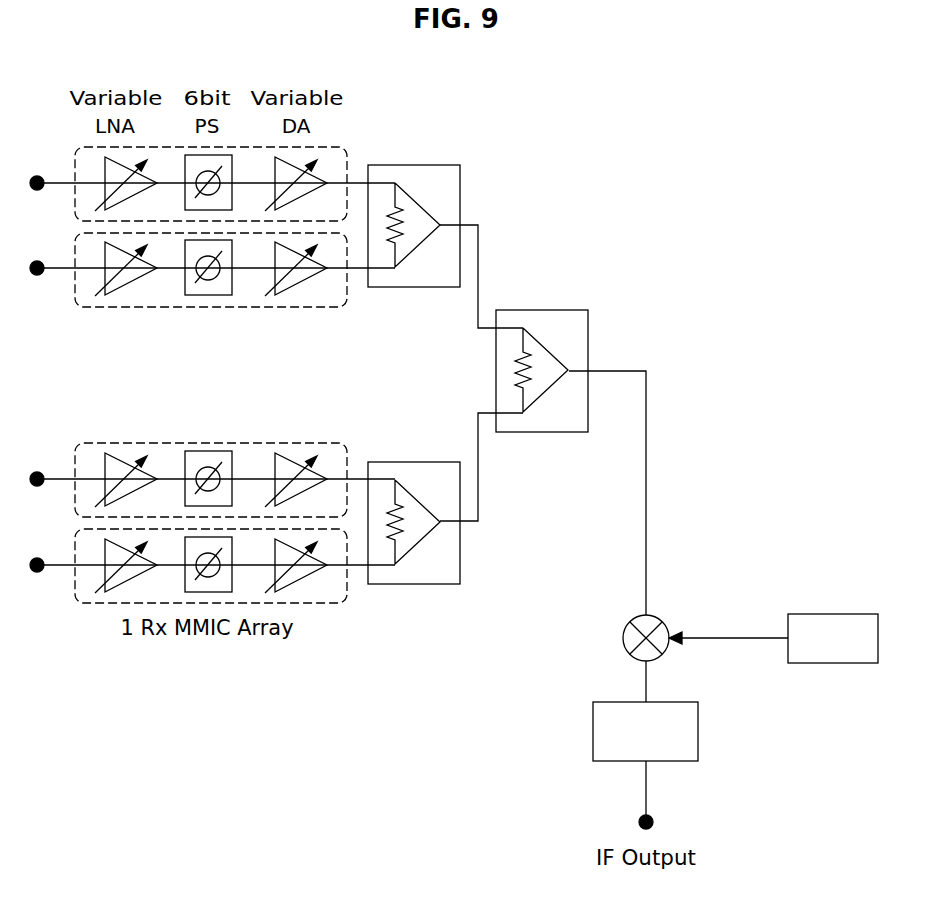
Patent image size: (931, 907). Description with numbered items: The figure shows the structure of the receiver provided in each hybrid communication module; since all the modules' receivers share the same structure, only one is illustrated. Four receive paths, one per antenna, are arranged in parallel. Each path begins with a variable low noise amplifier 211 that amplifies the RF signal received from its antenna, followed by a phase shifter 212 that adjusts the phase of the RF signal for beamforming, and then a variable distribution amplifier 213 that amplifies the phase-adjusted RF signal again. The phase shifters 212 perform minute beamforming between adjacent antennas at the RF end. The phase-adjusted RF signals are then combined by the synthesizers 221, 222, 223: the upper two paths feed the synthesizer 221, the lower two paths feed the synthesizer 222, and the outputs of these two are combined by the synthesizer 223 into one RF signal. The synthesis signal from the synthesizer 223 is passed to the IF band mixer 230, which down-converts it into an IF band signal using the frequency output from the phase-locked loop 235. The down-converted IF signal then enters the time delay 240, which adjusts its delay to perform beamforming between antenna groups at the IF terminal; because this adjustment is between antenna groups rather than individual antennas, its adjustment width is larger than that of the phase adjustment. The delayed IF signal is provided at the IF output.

The variable low noise amplifier 211 is at (104, 166).
The phase shifter 212 is at (184, 196).
The variable distribution amplifier 213 is at (315, 172).
The synthesizer 221 is at (437, 165).
The synthesizer 222 is at (460, 550).
The synthesizer 223 is at (540, 310).
The IF band mixer 230 is at (665, 620).
The phase-locked loop 235 is at (831, 614).
The time delay 240 is at (698, 730).